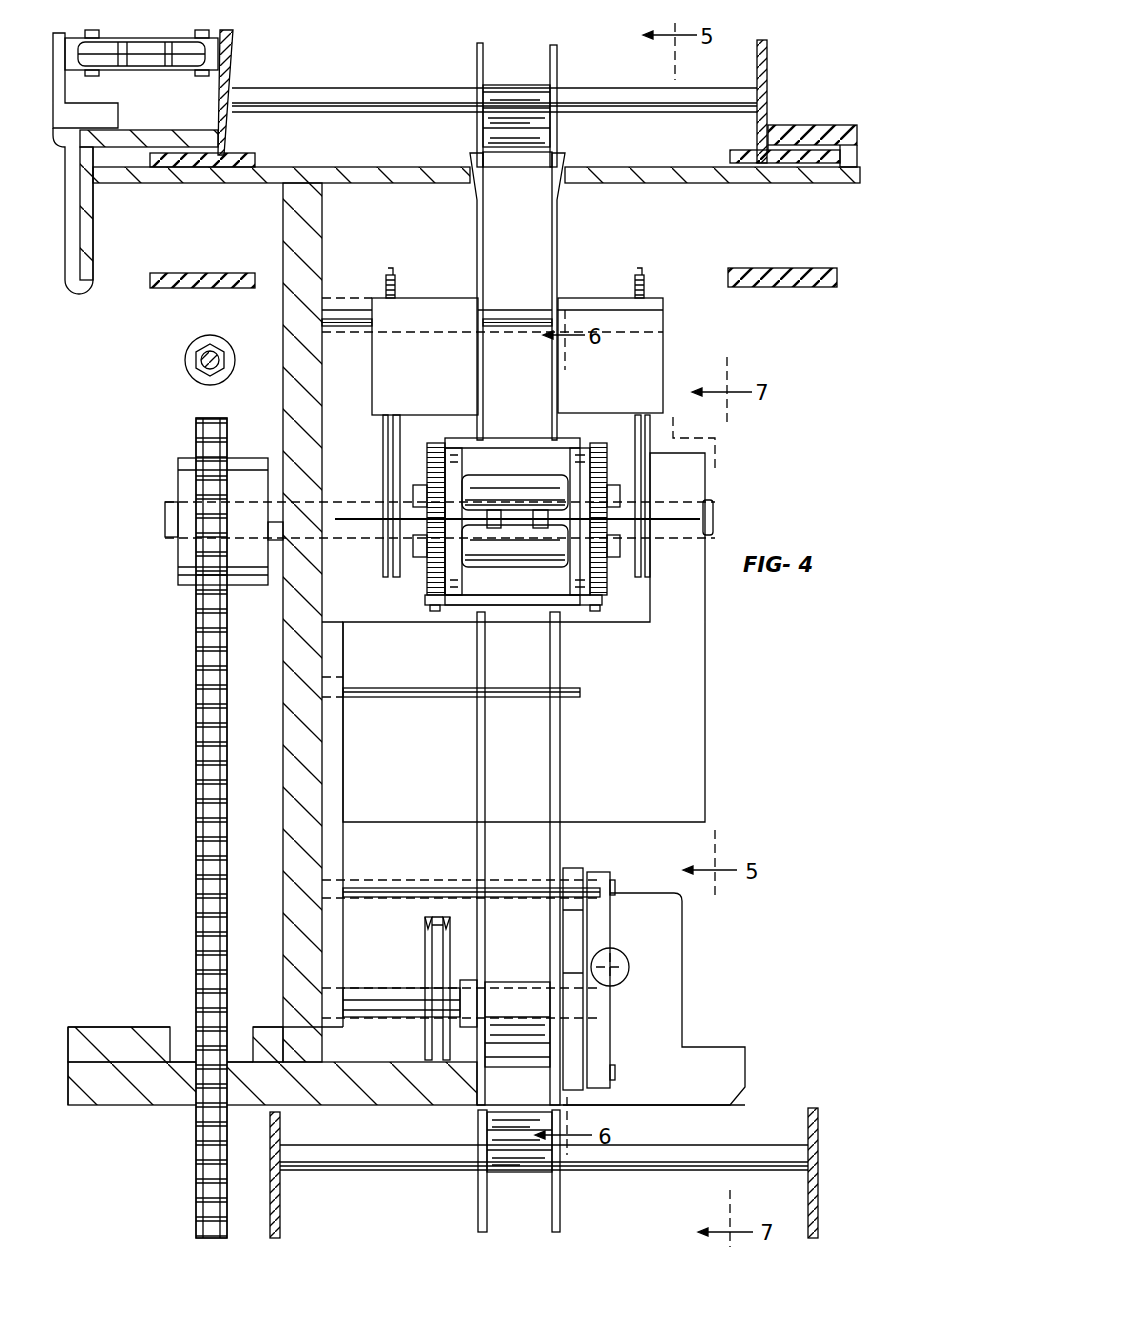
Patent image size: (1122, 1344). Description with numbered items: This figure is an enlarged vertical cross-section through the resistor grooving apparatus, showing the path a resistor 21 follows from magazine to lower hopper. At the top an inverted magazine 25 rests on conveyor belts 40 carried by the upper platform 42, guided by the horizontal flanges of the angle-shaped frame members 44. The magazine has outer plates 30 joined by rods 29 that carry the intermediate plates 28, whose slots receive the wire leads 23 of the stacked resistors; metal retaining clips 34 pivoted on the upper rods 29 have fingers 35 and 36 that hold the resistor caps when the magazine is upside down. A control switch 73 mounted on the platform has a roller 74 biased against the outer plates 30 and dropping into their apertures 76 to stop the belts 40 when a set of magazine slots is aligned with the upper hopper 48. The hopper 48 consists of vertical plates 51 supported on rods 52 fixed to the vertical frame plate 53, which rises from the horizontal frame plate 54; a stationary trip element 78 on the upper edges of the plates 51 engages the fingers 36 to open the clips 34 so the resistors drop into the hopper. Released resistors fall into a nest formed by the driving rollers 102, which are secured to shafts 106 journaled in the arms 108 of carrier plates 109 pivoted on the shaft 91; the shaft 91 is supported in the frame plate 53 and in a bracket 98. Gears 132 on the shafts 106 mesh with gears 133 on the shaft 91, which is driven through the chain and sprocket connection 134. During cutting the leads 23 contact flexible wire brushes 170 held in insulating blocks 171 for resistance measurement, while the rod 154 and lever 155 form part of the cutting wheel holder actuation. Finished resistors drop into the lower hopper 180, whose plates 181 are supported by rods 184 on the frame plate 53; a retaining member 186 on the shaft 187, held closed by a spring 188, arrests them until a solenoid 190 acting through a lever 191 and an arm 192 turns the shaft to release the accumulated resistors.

The resistor 21 is at (512, 515).
The wire leads 23 is at (350, 519).
The magazine 25 is at (768, 52).
The intermediate plates 28 is at (477, 50).
The rods 29 is at (342, 100).
The outer plates 30 is at (766, 80).
The retaining clips 34 is at (500, 95).
The finger 35 is at (495, 118).
The finger 36 is at (545, 133).
The conveyor belts 40 is at (250, 158).
The upper platform 42 is at (335, 176).
The longitudinal frame members 44 is at (144, 136).
The upper hopper 48 is at (529, 296).
The hopper plates 51 is at (478, 248).
The rods 52 is at (340, 322).
The vertical frame plate 53 is at (305, 246).
The horizontal frame plate 54 is at (130, 1095).
The control switch 73 is at (62, 85).
The roller 74 is at (176, 66).
The apertures 76 is at (230, 72).
The trip element 78 is at (527, 167).
The shaft 91 is at (170, 505).
The bracket 98 is at (700, 585).
The driving rollers 102 is at (530, 486).
The shafts 106 is at (455, 460).
The arms 108 is at (433, 445).
The carrier plate 109 is at (520, 445).
The gears 132 is at (416, 492).
The gears 133 is at (434, 606).
The chain and sprocket connection 134 is at (195, 748).
The rod 154 is at (195, 372).
The lever 155 is at (196, 352).
The wire brushes 170 is at (385, 430).
The insulating blocks 171 is at (400, 360).
The lower hopper 180 is at (561, 740).
The lower hopper plates 181 is at (478, 774).
The rods 184 is at (395, 697).
The retaining member 186 is at (512, 1040).
The shaft 187 is at (386, 1005).
The spring 188 is at (425, 937).
The solenoid 190 is at (665, 956).
The lever 191 is at (600, 1014).
The arm 192 is at (580, 1040).